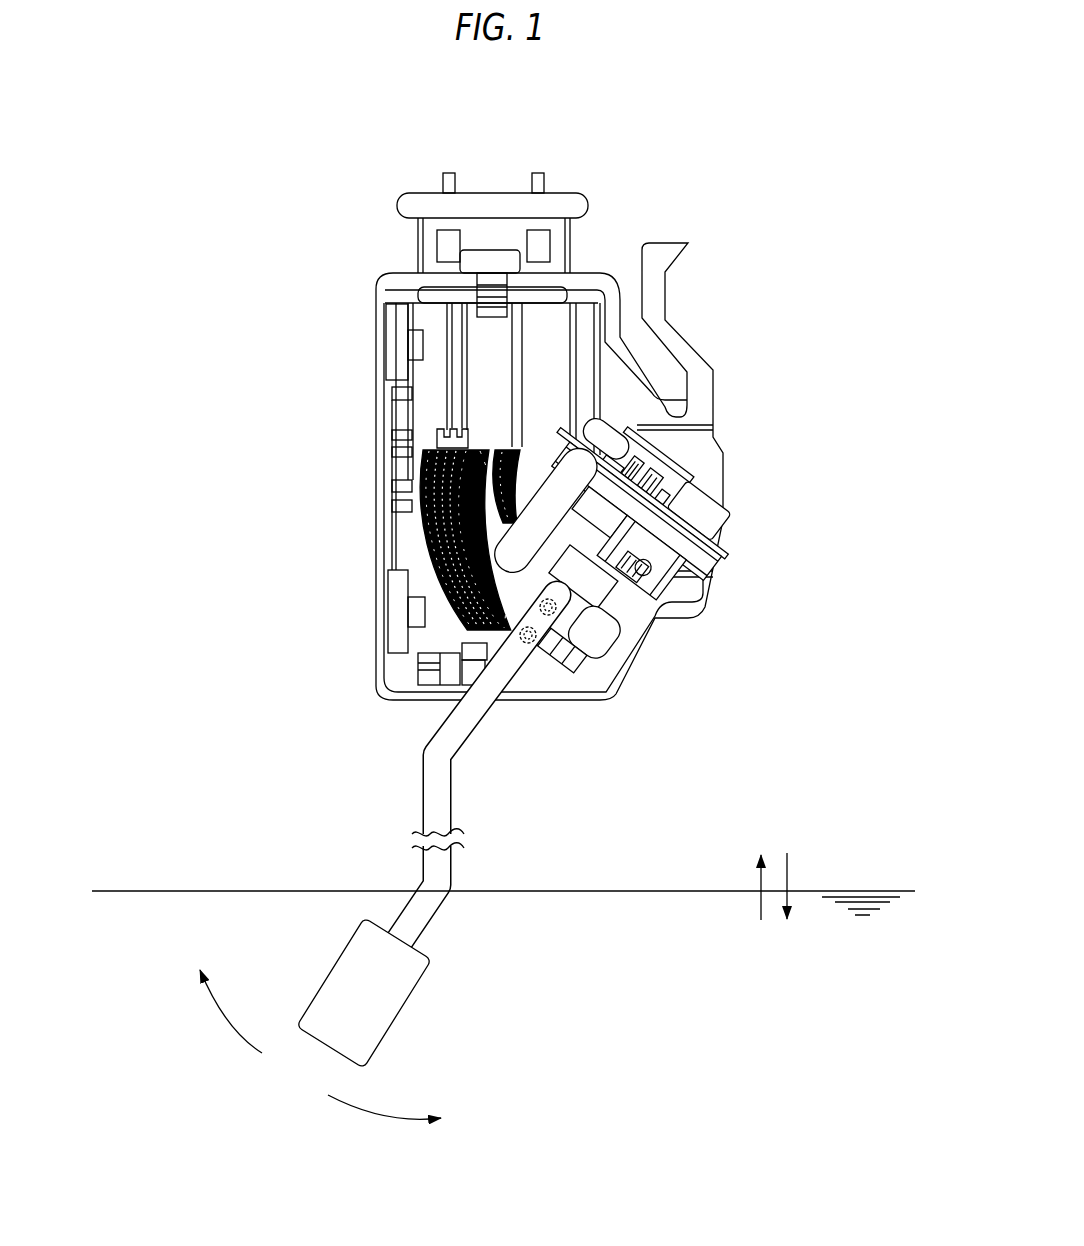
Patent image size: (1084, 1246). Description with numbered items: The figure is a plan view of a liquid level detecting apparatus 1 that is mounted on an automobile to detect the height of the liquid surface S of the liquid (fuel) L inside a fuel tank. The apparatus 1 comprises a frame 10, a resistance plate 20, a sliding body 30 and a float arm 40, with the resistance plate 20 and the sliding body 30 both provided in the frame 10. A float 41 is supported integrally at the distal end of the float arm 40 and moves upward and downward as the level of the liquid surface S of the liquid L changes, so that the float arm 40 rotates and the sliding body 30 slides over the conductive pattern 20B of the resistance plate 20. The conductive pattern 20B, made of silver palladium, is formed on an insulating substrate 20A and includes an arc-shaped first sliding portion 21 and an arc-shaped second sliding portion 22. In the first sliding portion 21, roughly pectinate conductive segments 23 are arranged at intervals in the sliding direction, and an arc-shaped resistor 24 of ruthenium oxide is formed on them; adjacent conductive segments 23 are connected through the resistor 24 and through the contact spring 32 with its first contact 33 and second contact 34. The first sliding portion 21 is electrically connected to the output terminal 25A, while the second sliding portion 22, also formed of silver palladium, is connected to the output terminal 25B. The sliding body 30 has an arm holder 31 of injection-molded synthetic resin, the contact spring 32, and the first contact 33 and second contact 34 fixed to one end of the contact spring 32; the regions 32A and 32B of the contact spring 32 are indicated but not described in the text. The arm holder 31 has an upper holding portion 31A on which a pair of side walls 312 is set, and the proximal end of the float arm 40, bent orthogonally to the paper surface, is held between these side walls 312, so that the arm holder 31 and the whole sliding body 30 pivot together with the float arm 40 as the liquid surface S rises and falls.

The liquid level detecting apparatus 1 is at (658, 174).
The frame 10 is at (642, 650).
The resistance plate 20 is at (409, 291).
The insulating substrate 20A is at (415, 463).
The conductive pattern 20B is at (420, 560).
The first sliding portion 21 is at (455, 432).
The second sliding portion 22 is at (503, 445).
The conductive segments 23 is at (425, 505).
The resistor 24 is at (432, 438).
The output terminal 25A is at (449, 172).
The output terminal 25B is at (537, 172).
The sliding body 30 is at (703, 475).
The arm holder 31 is at (699, 511).
The side walls 312 is at (648, 480).
The upper holding portion 31A is at (641, 557).
The contact spring 32 is at (577, 613).
The first holder part 32A is at (583, 577).
The second holder part 32B is at (594, 632).
The first contact 33 is at (527, 643).
The second contact 34 is at (551, 617).
The float arm 40 is at (428, 793).
The float 41 is at (357, 957).
The liquid surface S is at (197, 889).
The liquid (fuel) L is at (288, 1044).